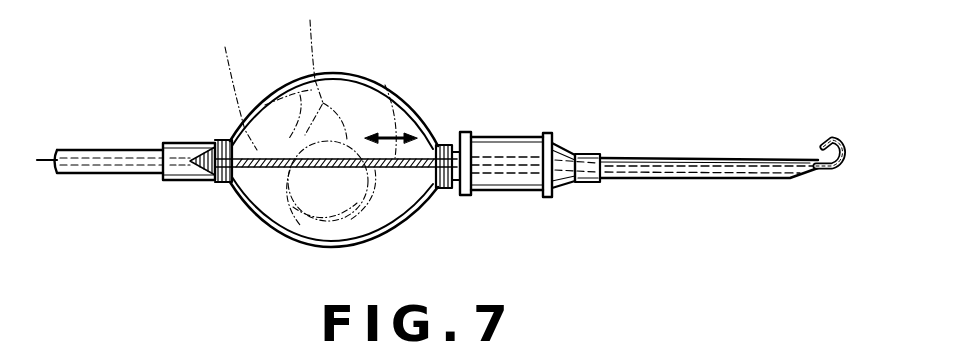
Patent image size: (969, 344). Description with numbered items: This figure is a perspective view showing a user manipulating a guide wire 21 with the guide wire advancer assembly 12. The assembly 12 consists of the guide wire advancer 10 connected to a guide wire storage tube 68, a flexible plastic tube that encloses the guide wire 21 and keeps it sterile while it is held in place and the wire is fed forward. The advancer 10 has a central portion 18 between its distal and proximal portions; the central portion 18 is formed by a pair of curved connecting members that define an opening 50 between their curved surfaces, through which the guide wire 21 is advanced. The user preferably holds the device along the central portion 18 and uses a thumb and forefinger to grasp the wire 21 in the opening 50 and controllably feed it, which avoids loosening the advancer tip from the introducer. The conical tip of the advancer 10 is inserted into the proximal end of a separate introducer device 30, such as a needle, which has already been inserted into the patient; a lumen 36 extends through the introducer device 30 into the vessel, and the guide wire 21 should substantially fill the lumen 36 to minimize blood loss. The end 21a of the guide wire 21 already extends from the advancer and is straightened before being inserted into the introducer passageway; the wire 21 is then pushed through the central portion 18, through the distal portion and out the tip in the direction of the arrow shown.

The guide wire advancer 10 is at (440, 125).
The guide wire advancer assembly 12 is at (474, 114).
The central portion 18 is at (334, 152).
The guide wire 21 is at (383, 169).
The end of the guide wire 21a is at (821, 145).
The introducer device 30 is at (560, 148).
The lumen 36 is at (678, 158).
The opening 50 is at (373, 129).
The guide wire storage tube 68 is at (115, 153).